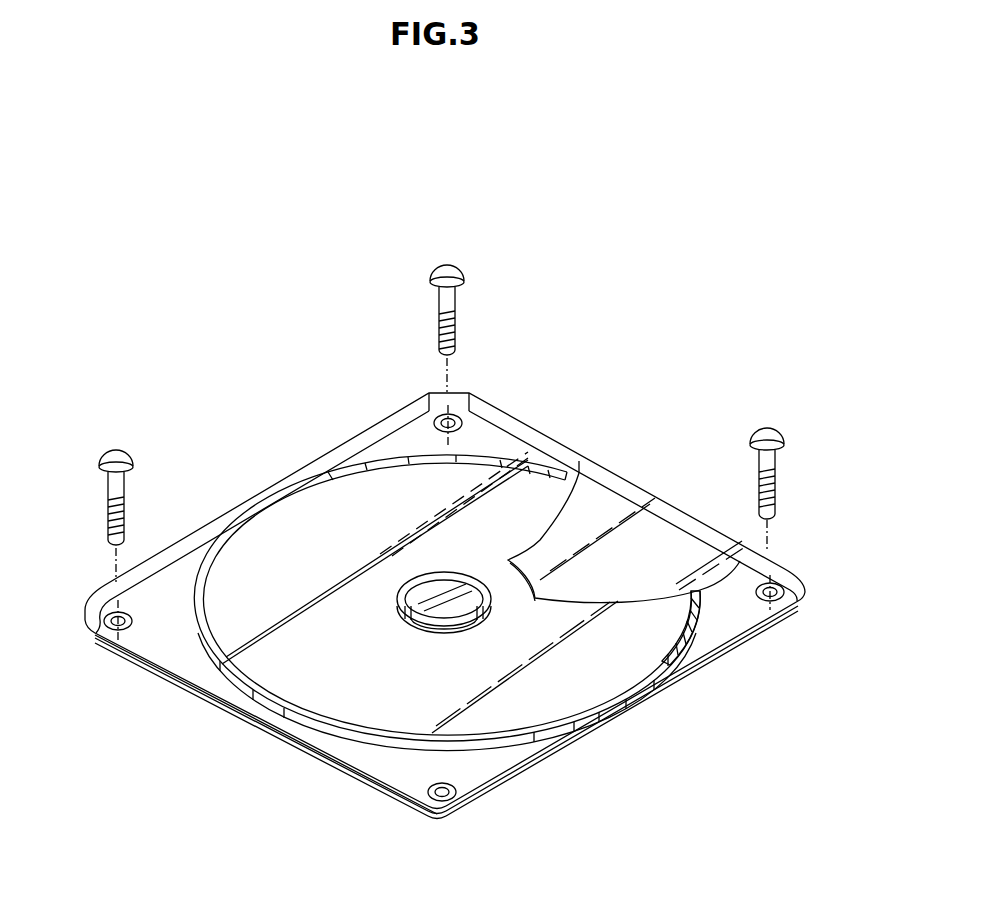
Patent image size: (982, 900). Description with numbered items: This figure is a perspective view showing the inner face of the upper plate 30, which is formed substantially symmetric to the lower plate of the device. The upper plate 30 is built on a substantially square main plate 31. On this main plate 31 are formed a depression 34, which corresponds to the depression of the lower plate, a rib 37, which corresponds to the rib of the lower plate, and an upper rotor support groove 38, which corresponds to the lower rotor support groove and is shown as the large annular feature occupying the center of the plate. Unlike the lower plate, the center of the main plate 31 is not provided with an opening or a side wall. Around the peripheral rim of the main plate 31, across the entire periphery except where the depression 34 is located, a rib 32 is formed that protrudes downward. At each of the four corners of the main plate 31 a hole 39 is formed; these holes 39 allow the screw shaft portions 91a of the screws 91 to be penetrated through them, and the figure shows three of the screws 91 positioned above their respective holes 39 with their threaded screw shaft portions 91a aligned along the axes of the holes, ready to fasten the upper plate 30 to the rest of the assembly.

The upper plate 30 is at (548, 433).
The main plate 31 is at (497, 760).
The rib 32 is at (323, 757).
The depression 34 is at (671, 506).
The rib 37 is at (450, 633).
The upper rotor support groove 38 is at (204, 655).
The holes 39 is at (452, 428).
The screws 91 is at (432, 268).
The screw shaft portions 91a is at (438, 322).